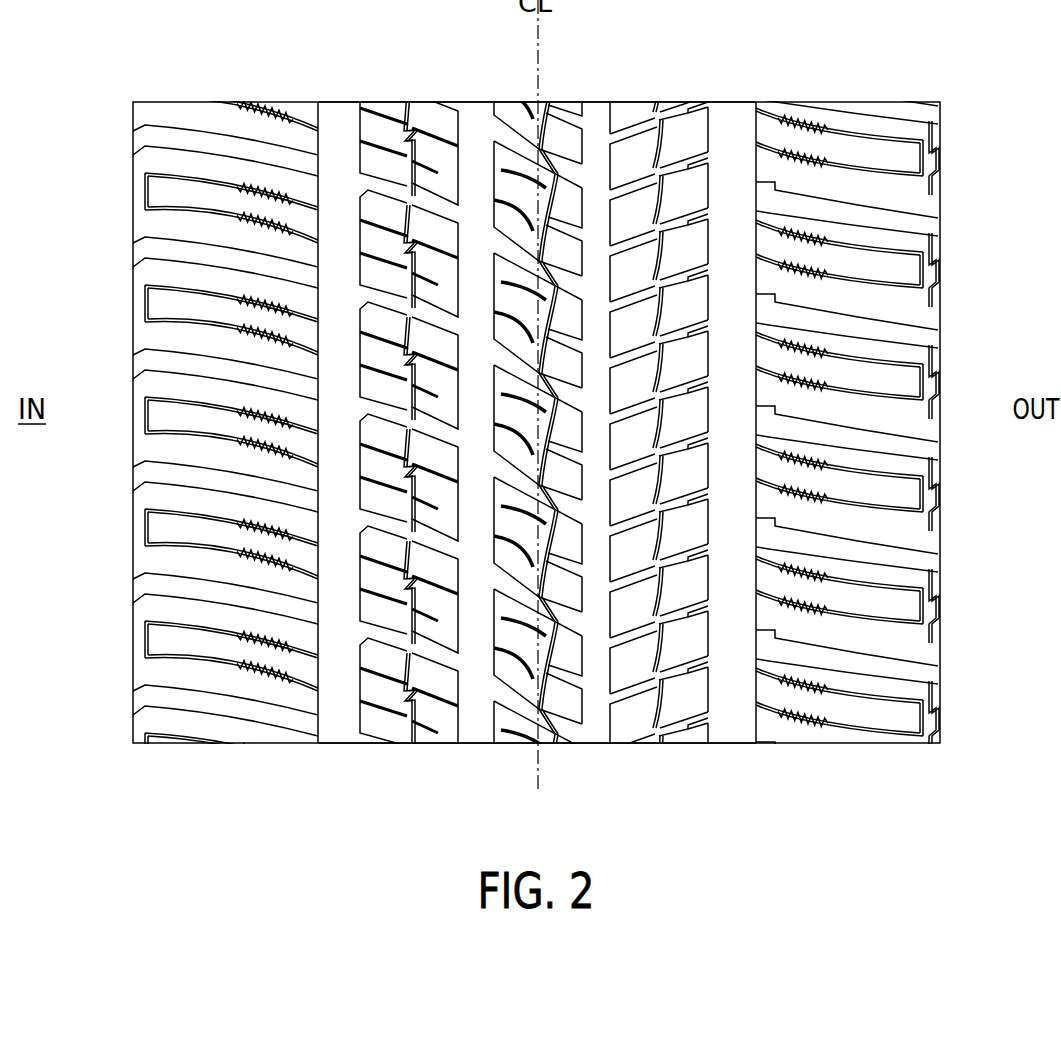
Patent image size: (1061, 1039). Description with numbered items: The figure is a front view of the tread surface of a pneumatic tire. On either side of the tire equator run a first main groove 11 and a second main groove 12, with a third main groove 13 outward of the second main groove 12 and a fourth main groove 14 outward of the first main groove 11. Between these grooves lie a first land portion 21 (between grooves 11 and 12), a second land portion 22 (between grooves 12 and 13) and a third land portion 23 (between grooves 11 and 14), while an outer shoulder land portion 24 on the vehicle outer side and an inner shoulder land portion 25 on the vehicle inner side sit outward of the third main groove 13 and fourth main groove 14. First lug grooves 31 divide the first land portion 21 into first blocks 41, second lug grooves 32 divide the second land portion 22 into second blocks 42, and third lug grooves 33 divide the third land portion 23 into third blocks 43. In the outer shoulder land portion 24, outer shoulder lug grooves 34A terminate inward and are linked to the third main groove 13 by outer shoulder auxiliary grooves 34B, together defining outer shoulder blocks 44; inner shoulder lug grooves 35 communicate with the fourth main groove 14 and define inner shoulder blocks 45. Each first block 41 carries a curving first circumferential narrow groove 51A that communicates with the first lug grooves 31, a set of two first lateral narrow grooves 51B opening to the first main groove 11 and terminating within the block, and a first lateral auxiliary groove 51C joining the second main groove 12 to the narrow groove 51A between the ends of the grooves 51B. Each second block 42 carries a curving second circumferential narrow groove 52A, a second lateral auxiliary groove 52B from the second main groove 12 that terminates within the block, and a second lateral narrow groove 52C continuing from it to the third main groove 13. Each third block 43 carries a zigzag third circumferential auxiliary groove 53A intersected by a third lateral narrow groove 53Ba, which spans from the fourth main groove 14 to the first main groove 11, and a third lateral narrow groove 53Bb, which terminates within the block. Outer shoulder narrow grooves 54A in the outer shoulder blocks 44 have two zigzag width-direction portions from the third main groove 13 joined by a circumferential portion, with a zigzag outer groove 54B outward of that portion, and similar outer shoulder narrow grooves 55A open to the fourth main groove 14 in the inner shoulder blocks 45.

The first main groove 11 is at (470, 102).
The second main groove 12 is at (597, 102).
The third main groove 13 is at (731, 102).
The fourth main groove 14 is at (338, 102).
The first land portion 21 is at (526, 99).
The second land portion 22 is at (659, 100).
The third land portion 23 is at (411, 100).
The outer shoulder land portion 24 is at (822, 96).
The inner shoulder land portion 25 is at (243, 100).
The first lug groove 31 is at (515, 133).
The second lug groove 32 is at (685, 125).
The third lug groove 33 is at (381, 190).
The outer shoulder lug groove 34A is at (853, 203).
The outer shoulder auxiliary groove 34B is at (762, 180).
The inner shoulder lug groove 35 is at (193, 142).
The first block 41 is at (552, 133).
The second block 42 is at (637, 130).
The third block 43 is at (438, 133).
The outer shoulder block 44 is at (899, 127).
The inner shoulder block 45 is at (277, 205).
The first circumferential narrow groove 51A is at (555, 700).
The first lateral narrow groove 51B is at (512, 668).
The first lateral auxiliary groove 51C is at (558, 680).
The second circumferential narrow groove 52A is at (667, 690).
The second lateral auxiliary groove 52B is at (630, 690).
The second lateral narrow groove 52C is at (705, 670).
The third circumferential auxiliary groove 53A is at (403, 740).
The third lateral narrow groove 53Ba is at (443, 703).
The third lateral narrow groove 53Bb is at (377, 712).
The outer shoulder narrow groove 54A is at (882, 702).
The outer groove 54B is at (937, 712).
The outer shoulder narrow groove 55A is at (180, 660).